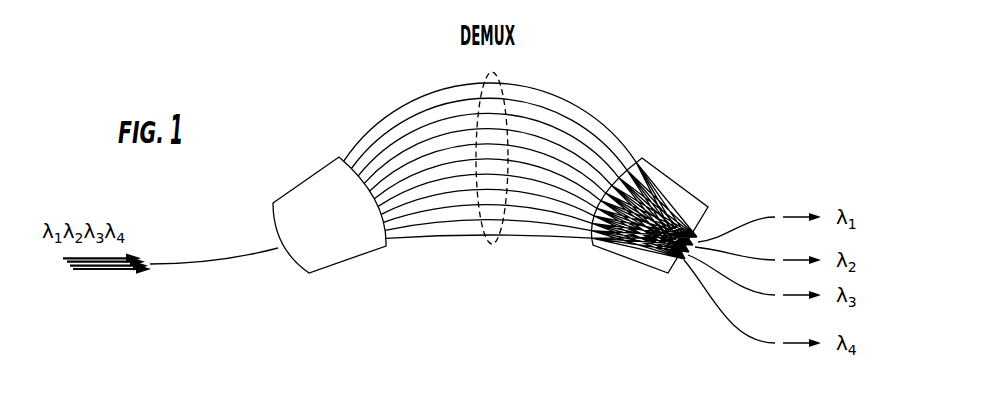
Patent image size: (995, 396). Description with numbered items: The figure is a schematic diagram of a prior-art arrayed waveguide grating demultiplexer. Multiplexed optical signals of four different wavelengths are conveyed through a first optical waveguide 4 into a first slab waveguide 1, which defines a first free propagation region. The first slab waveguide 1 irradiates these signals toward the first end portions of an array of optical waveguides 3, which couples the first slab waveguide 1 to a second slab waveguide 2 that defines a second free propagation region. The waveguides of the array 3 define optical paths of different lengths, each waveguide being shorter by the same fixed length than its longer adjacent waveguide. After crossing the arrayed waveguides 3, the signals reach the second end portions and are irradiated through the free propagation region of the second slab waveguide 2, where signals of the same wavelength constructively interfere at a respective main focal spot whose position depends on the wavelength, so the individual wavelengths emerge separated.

The first slab waveguide 1 is at (297, 182).
The second slab waveguide 2 is at (677, 178).
The array of optical waveguides 3 is at (496, 240).
The first optical waveguide 4 is at (203, 263).